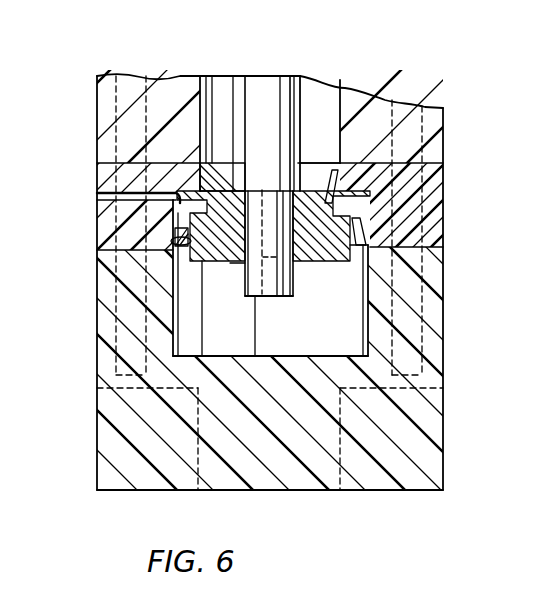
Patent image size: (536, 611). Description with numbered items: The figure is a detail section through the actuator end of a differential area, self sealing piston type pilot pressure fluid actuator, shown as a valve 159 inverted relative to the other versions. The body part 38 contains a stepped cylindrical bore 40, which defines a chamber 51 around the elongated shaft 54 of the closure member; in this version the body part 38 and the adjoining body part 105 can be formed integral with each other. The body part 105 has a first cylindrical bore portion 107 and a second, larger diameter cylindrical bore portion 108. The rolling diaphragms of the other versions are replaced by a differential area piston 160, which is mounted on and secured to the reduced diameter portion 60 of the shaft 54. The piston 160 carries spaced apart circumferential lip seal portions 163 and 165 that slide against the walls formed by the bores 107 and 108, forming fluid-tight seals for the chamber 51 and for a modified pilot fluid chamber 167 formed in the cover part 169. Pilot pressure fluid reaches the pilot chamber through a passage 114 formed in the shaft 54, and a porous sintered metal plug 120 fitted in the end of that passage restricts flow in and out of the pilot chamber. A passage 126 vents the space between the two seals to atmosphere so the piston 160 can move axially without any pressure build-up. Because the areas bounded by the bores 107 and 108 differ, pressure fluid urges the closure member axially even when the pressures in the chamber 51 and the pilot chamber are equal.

The body part 38 is at (434, 125).
The stepped cylindrical bore 40 is at (200, 101).
The chamber 51 is at (327, 137).
The elongated shaft 54 is at (328, 70).
The reduced diameter portion 60 is at (293, 283).
The body part 105 is at (97, 231).
The first cylindrical bore portion 107 is at (199, 163).
The second cylindrical bore portion 108 is at (171, 241).
The passage 114 is at (262, 190).
The plug 120 is at (262, 298).
The passage 126 is at (97, 200).
The valve 159 is at (91, 268).
The differential area piston 160 is at (323, 264).
The lip seal portion 163 is at (332, 170).
The lip seal portion 165 is at (372, 232).
The pilot fluid chamber 167 is at (298, 350).
The cover part 169 is at (97, 440).